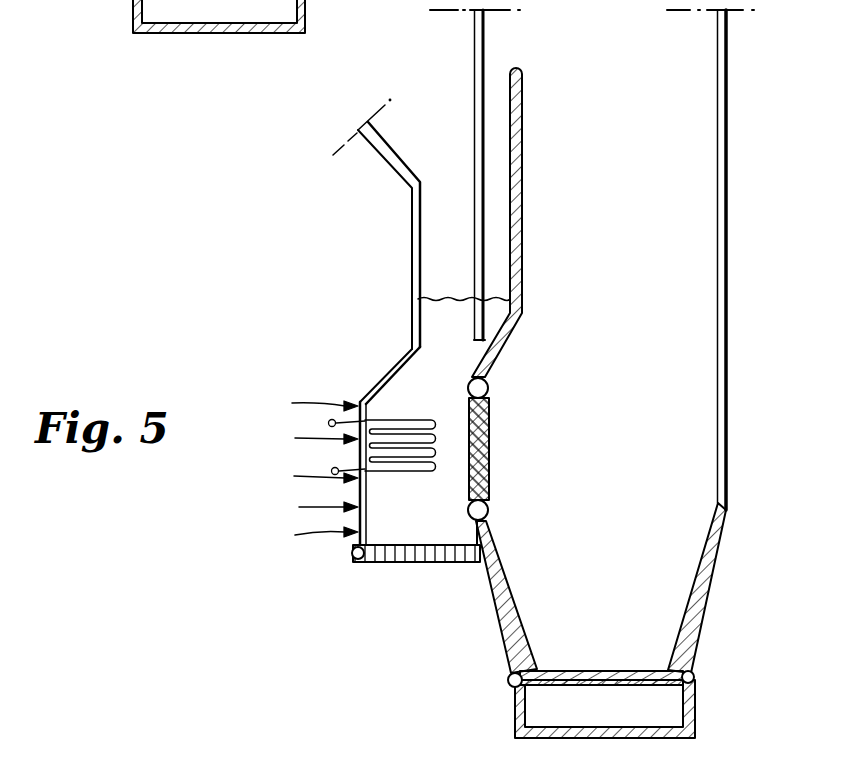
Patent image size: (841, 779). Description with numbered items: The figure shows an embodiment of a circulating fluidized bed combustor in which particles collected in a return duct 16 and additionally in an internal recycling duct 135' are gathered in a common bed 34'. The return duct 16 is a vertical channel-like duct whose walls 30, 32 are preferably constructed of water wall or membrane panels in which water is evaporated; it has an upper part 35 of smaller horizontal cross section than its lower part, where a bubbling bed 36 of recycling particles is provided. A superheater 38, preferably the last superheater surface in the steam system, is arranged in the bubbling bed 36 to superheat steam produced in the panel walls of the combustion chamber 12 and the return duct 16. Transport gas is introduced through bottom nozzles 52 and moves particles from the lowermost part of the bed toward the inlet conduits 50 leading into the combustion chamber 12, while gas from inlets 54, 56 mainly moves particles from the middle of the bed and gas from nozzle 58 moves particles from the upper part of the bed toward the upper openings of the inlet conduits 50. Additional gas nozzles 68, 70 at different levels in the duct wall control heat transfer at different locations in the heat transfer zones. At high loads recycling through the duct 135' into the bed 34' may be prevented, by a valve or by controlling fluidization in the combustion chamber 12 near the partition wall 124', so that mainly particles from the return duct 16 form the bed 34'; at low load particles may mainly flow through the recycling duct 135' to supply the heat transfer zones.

The combustion chamber 12 is at (604, 245).
The return duct 16 is at (430, 213).
The wall 30 is at (420, 348).
The wall 32 is at (473, 345).
The common bed 34' is at (346, 375).
The upper part of the return duct 35 is at (435, 240).
The bubbling bed 36 is at (432, 527).
The superheater 38 is at (408, 473).
The inlet conduits 50 is at (487, 399).
The bottom nozzles 52 is at (402, 557).
The inlet 54 is at (315, 545).
The inlet 56 is at (314, 511).
The nozzle 58 is at (309, 403).
The gas nozzle 68 is at (314, 473).
The gas nozzle 70 is at (312, 436).
The partition wall 124' is at (529, 222).
The recycling duct 135' is at (509, 175).